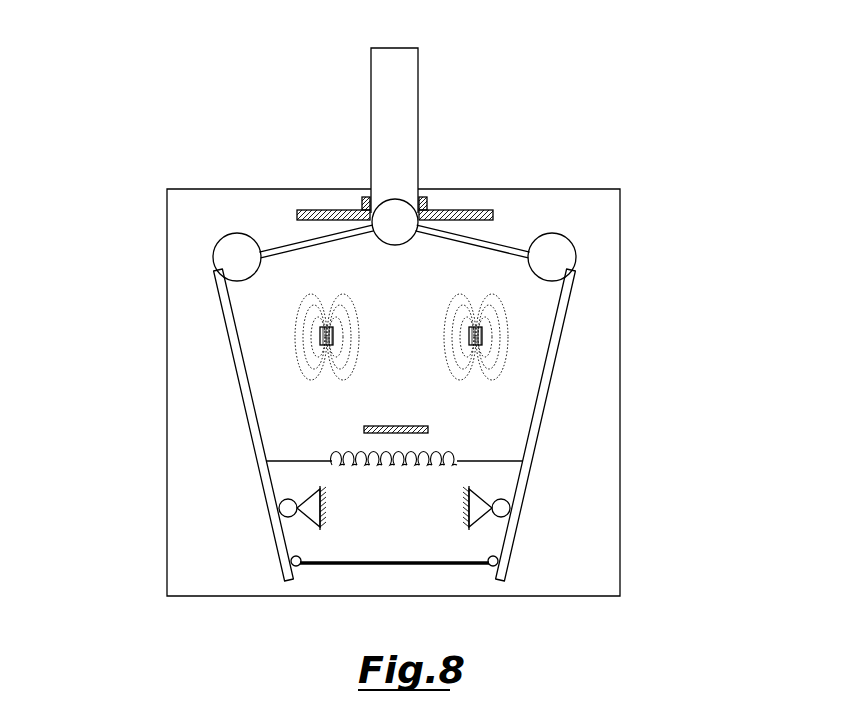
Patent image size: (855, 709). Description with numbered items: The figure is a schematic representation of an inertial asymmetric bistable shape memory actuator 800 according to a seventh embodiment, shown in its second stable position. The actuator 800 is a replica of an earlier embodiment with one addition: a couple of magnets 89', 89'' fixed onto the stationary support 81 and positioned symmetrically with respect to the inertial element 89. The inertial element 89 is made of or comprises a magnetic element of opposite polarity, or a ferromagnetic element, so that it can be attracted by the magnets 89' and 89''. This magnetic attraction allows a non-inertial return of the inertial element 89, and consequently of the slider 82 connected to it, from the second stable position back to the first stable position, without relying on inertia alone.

The inertial asymmetric bistable shape memory actuator 800 is at (512, 163).
The stationary support 81 is at (205, 520).
The slider 82 is at (402, 118).
The inertial element 89 is at (317, 153).
The magnet 89' is at (207, 341).
The magnet 89'' is at (598, 327).